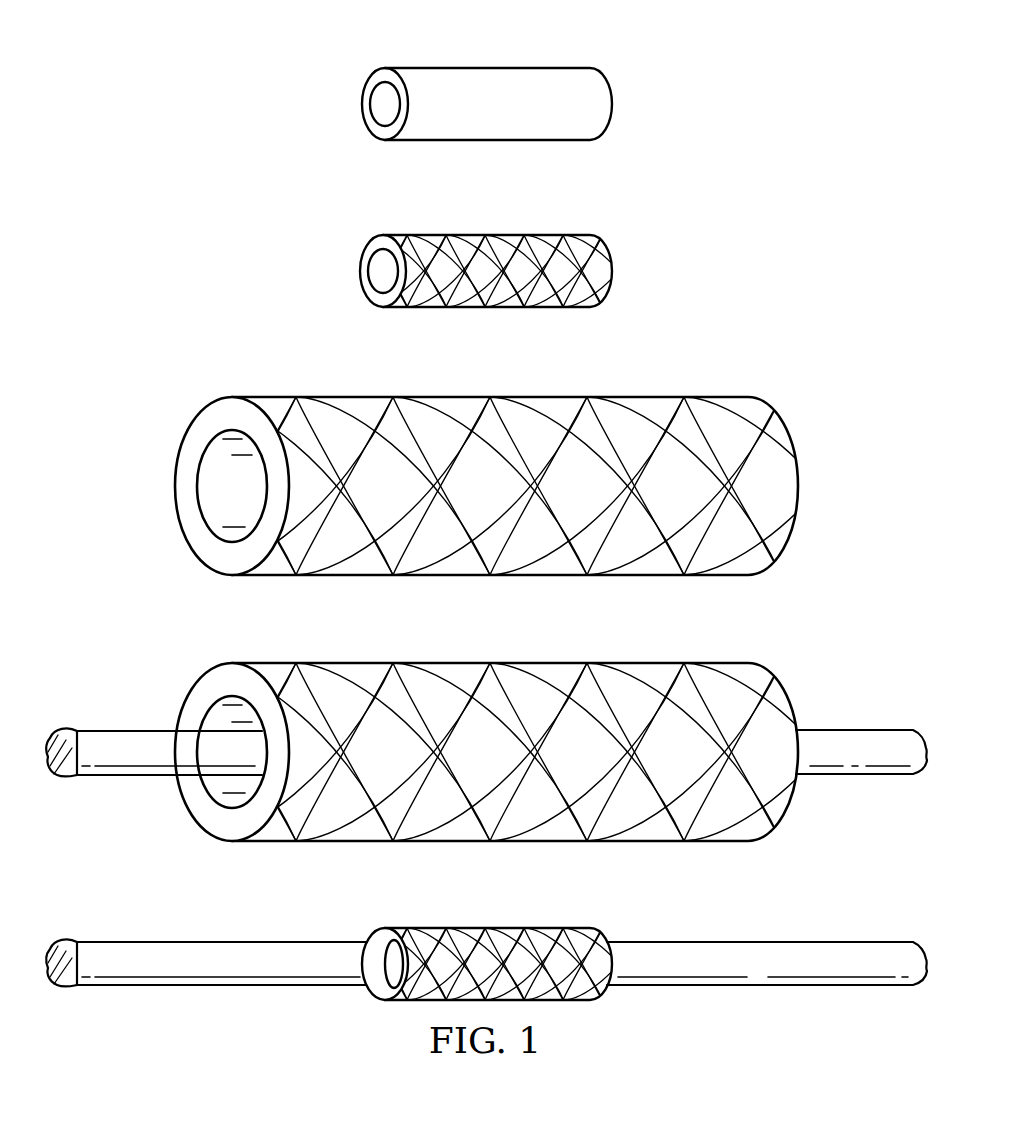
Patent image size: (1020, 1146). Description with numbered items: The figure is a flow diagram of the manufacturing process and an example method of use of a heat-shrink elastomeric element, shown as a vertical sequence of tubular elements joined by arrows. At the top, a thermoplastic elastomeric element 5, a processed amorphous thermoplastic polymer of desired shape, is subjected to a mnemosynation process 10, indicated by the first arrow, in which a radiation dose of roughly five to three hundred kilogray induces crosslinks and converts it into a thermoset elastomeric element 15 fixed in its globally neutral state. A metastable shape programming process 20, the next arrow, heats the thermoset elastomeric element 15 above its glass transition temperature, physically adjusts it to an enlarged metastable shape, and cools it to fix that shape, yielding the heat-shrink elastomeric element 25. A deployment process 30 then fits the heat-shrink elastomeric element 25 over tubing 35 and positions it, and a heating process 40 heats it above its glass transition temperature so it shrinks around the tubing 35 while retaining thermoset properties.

The thermoplastic elastomeric element 5 is at (541, 84).
The mnemosynation process 10 is at (486, 153).
The thermoset elastomeric element 15 is at (538, 250).
The metastable shape programming process 20 is at (486, 318).
The heat-shrink elastomeric element 25 is at (648, 408).
The deployment process 30 is at (487, 587).
The tubing 35 is at (854, 768).
The heating process 40 is at (486, 850).